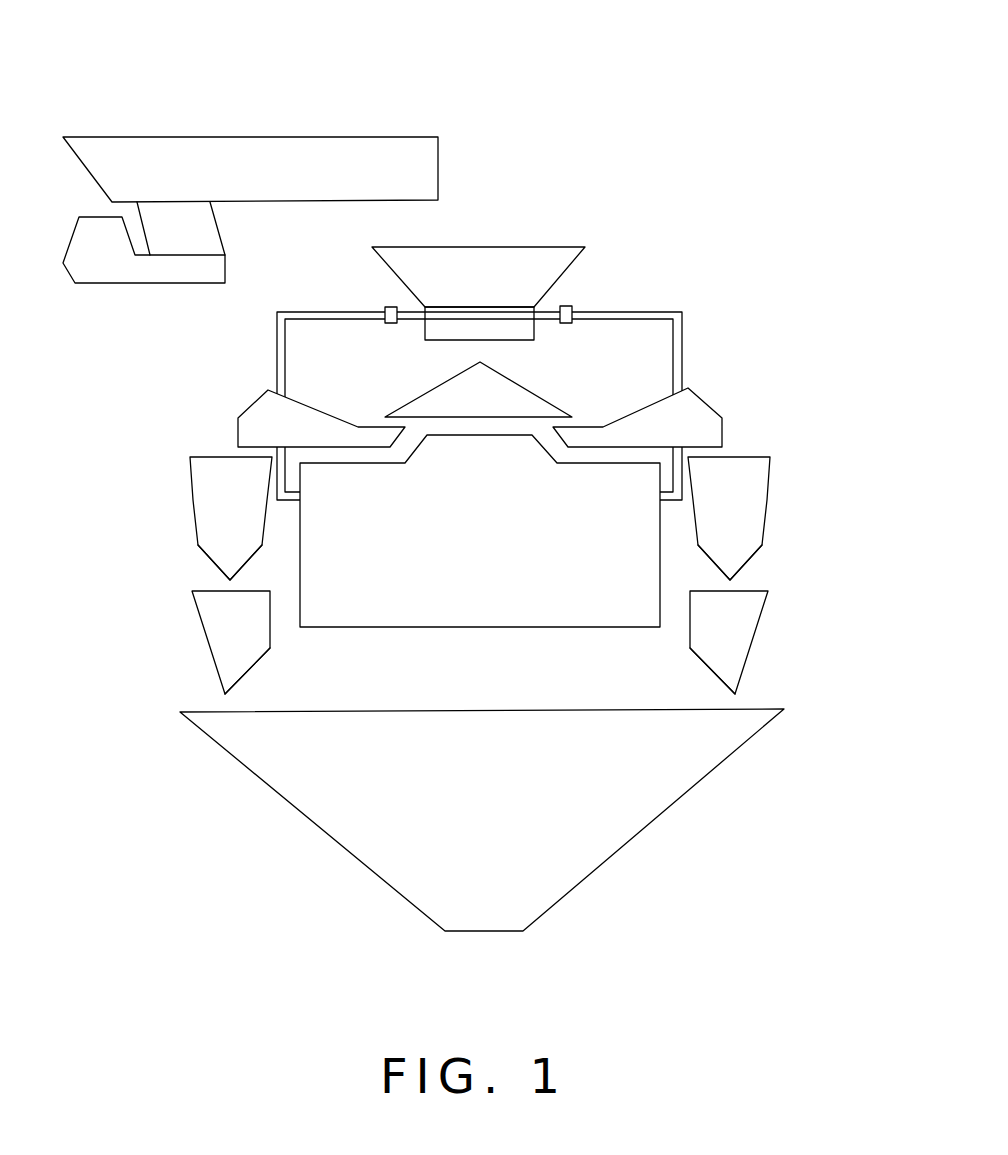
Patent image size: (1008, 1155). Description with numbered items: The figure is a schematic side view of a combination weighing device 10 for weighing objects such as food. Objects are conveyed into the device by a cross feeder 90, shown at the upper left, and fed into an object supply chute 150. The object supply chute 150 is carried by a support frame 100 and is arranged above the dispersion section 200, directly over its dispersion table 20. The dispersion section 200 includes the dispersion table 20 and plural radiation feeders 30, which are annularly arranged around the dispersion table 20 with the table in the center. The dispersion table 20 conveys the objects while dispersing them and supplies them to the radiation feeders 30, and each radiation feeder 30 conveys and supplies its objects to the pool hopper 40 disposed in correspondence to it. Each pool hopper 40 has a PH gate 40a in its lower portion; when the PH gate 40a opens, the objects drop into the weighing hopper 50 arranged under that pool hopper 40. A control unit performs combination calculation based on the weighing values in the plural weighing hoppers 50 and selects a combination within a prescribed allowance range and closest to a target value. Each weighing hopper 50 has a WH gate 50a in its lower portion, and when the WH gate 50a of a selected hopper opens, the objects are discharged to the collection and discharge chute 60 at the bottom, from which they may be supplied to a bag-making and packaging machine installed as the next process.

The combination weighing device 10 is at (758, 157).
The dispersion table 20 is at (432, 383).
The radiation feeders 30 is at (237, 408).
The pool hopper 40 is at (180, 482).
The PH gate 40a is at (202, 568).
The weighing hopper 50 is at (167, 603).
The WH gate 50a is at (213, 685).
The collection and discharge chute 60 is at (173, 736).
The cross feeder 90 is at (235, 108).
The support frame 100 is at (637, 303).
The object supply chute 150 is at (553, 233).
The dispersion section 200 is at (553, 393).